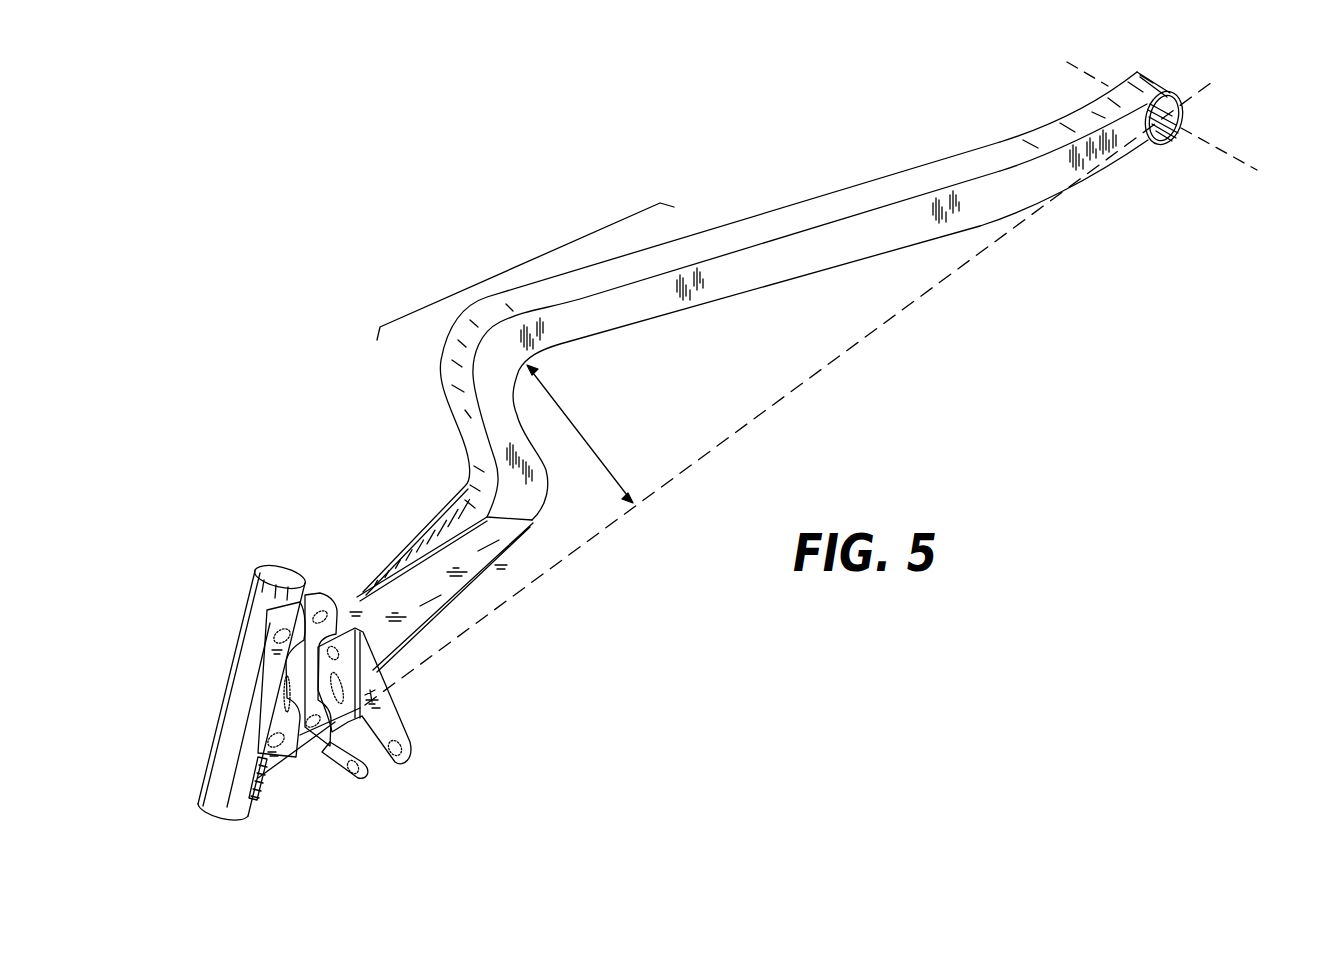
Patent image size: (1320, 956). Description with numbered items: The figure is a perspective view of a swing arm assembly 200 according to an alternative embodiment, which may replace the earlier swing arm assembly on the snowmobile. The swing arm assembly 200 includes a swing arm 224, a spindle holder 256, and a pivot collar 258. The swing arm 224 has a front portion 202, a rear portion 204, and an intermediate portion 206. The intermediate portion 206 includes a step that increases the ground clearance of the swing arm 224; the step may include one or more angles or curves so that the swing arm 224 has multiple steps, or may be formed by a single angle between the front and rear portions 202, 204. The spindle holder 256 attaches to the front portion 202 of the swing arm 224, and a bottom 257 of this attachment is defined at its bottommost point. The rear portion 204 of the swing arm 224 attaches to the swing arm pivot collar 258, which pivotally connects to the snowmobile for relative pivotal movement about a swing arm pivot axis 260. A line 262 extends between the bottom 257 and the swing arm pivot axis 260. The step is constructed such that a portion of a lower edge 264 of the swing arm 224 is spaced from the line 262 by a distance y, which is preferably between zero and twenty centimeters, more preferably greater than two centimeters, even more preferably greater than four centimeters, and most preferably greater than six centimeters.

The swing arm assembly 200 is at (579, 163).
The front portion 202 is at (332, 527).
The rear portion 204 is at (1126, 183).
The intermediate portion 206 is at (473, 286).
The swing arm 224 is at (810, 263).
The spindle holder 256 is at (235, 700).
The bottom 257 is at (259, 782).
The pivot collar 258 is at (1180, 117).
The swing arm pivot axis 260 is at (1086, 75).
The line 262 is at (786, 394).
The lower edge 264 is at (633, 327).
The distance y is at (580, 425).